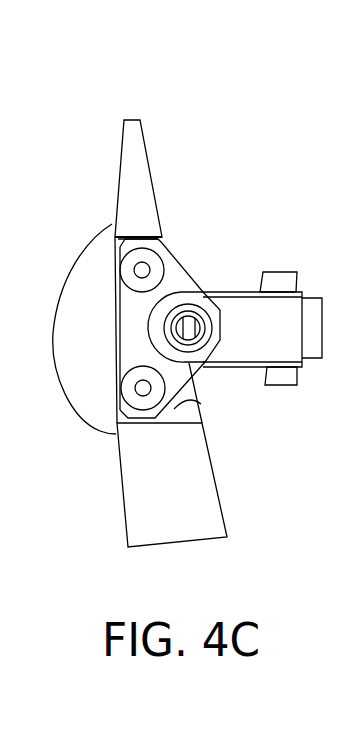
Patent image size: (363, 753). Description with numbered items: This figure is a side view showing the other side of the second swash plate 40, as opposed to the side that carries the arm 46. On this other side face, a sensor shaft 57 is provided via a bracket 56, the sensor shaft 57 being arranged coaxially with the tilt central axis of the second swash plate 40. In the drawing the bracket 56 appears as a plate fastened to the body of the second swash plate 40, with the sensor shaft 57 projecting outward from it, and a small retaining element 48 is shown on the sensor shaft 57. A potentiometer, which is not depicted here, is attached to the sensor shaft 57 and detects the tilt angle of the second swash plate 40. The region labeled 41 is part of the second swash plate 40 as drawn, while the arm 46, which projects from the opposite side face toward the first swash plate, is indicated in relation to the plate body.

The second swash plate 40 is at (158, 125).
The anvil 41 is at (82, 412).
The arm 46 is at (233, 291).
The retaining clip 48 is at (282, 280).
The bracket 56 is at (203, 417).
The sensor shaft 57 is at (192, 345).